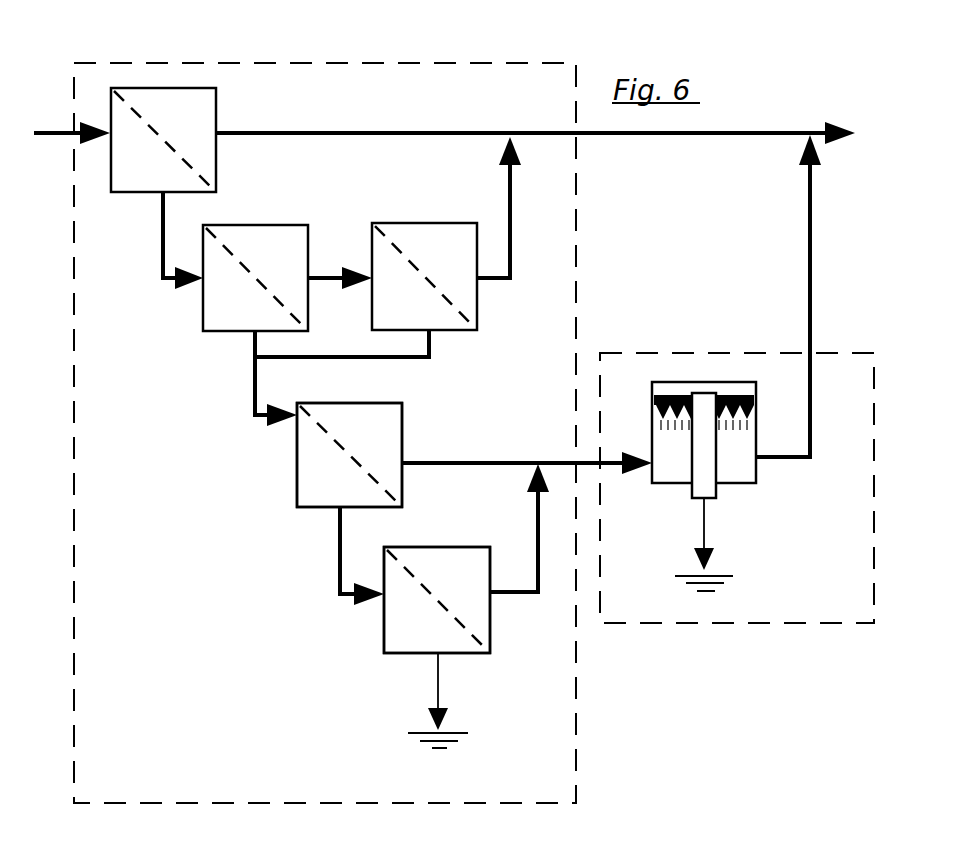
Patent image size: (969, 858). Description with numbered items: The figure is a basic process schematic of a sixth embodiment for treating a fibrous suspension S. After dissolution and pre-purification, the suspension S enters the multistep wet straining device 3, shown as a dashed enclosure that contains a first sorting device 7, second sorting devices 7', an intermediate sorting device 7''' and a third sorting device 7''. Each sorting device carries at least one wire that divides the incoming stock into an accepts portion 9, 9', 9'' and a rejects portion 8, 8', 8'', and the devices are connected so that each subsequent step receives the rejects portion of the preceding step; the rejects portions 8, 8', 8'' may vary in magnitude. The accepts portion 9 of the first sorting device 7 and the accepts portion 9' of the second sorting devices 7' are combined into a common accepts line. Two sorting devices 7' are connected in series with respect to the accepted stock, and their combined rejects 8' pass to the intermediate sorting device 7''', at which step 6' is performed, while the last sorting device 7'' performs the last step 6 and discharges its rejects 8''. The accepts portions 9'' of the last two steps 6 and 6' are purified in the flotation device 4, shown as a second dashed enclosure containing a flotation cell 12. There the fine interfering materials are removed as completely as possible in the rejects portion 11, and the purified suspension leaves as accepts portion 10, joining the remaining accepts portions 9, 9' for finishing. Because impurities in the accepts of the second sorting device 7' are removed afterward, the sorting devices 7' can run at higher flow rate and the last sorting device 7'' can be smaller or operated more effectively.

The suspension S is at (55, 133).
The wet straining device 3 is at (554, 98).
The flotation device 4 is at (866, 383).
The sorting step 6 is at (373, 626).
The intermediate sorting step 6' is at (299, 485).
The first sorting device 7 is at (163, 140).
The second sorting device 7' is at (340, 277).
The third sorting device 7'' is at (437, 600).
The intermediate sorting device 7''' is at (474, 504).
The rejects portion 8 is at (162, 240).
The rejects portion 8' is at (316, 390).
The rejects portion 8'' is at (424, 700).
The accepts portion 9 is at (535, 109).
The accepts portion 9' is at (489, 207).
The accepts portion 9'' is at (519, 471).
The accepts portion 10 is at (808, 228).
The rejects portion 11 is at (708, 533).
The flotation cell 12 is at (753, 476).